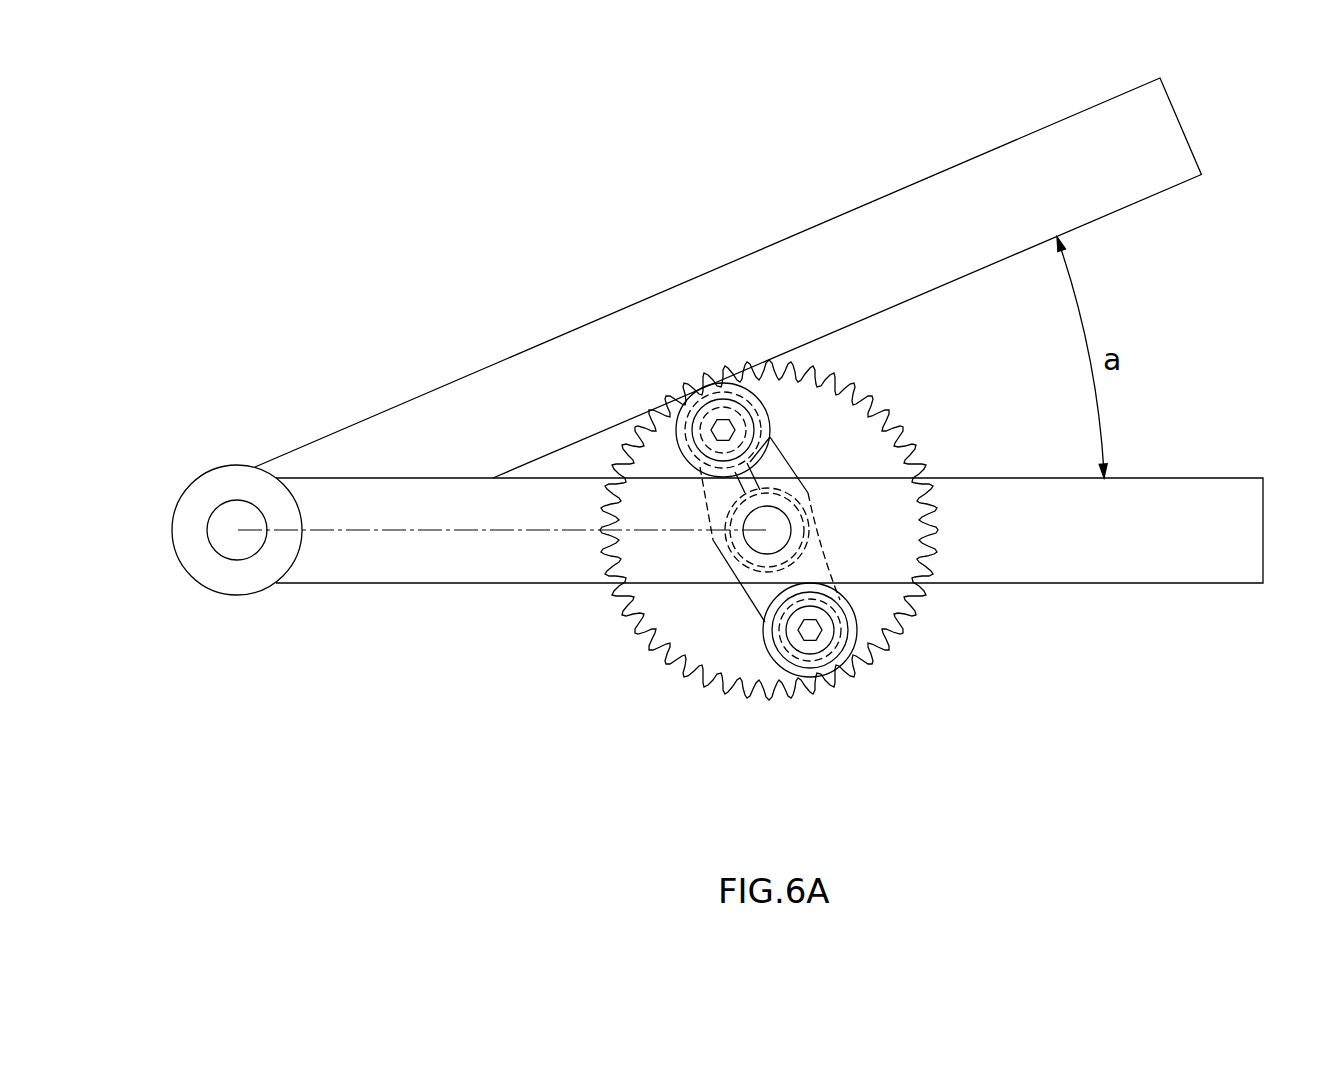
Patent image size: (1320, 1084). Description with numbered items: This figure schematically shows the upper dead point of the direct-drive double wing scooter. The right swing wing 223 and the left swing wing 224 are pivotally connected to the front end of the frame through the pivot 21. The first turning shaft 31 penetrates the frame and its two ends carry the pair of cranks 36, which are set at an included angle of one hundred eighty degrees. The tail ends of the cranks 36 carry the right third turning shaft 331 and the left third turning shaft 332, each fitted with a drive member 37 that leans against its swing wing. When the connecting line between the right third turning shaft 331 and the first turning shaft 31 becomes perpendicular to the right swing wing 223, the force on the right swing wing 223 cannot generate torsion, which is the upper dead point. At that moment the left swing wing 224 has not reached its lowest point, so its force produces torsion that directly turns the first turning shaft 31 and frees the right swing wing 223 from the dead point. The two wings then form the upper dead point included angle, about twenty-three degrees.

The pivot 21 is at (235, 513).
The right swing wing 223 is at (852, 210).
The left swing wing 224 is at (1108, 584).
The first turning shaft 31 is at (780, 553).
The right third turning shaft 331 is at (700, 383).
The left third turning shaft 332 is at (820, 632).
The crank 36 is at (792, 447).
The drive member 37 is at (758, 396).